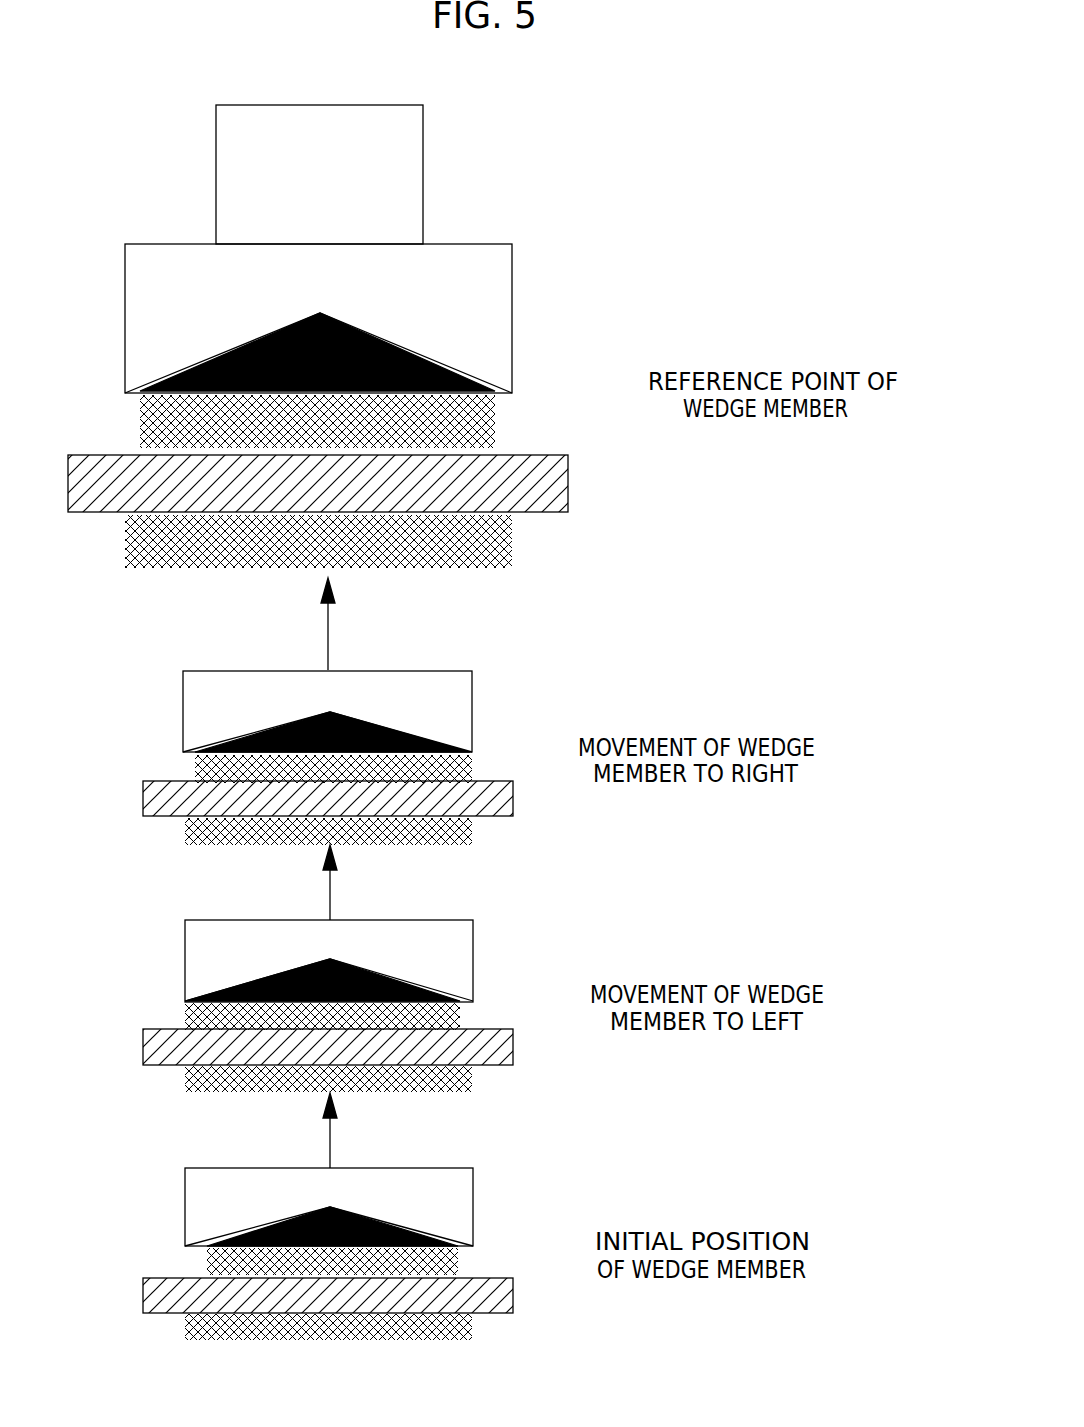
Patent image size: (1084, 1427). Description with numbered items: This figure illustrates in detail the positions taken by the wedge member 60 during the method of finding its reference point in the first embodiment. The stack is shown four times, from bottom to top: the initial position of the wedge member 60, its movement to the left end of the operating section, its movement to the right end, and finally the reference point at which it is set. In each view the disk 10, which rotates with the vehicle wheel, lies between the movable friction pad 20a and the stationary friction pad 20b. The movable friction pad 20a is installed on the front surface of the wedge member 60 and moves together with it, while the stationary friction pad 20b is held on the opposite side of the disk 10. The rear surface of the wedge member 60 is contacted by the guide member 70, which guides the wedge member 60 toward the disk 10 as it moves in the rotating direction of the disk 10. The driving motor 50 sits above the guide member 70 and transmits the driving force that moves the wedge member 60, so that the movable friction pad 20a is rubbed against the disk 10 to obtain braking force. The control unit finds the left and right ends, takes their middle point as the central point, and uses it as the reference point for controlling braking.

The driving motor 50 is at (415, 177).
The guide member 70 is at (493, 313).
The wedge member 60 is at (413, 349).
The movable friction pad 20a is at (475, 420).
The disk 10 is at (560, 481).
The stationary friction pad 20b is at (480, 541).